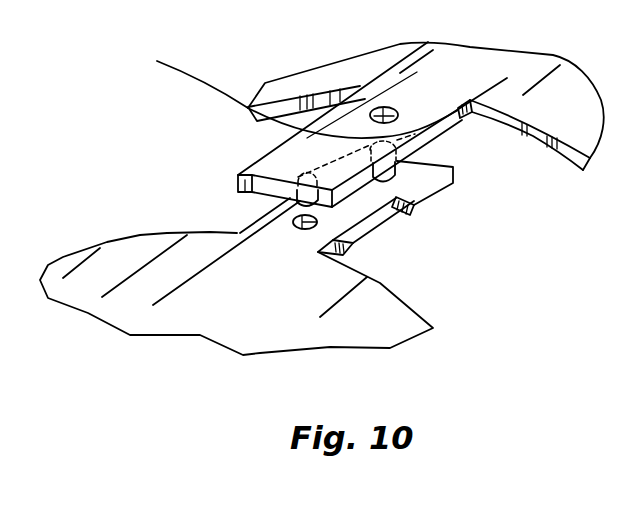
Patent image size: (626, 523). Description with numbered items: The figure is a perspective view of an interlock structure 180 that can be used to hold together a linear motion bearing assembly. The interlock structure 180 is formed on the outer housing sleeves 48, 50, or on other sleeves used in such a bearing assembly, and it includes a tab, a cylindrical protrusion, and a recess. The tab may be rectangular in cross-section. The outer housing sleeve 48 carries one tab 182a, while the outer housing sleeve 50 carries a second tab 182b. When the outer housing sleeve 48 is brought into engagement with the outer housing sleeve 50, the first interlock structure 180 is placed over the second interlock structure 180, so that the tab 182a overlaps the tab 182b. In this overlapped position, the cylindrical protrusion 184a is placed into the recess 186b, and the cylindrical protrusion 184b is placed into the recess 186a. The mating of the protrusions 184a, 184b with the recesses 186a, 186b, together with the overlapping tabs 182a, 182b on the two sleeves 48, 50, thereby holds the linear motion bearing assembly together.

The interlock structure 180 is at (158, 90).
The tab 182a is at (397, 200).
The second tab 182b is at (246, 170).
The cylindrical protrusion 184a is at (437, 184).
The cylindrical protrusion 184b is at (367, 220).
The recess 186a is at (313, 227).
The recess 186b is at (375, 108).
The outer housing sleeve 48 is at (233, 300).
The outer housing sleeve 50 is at (453, 82).